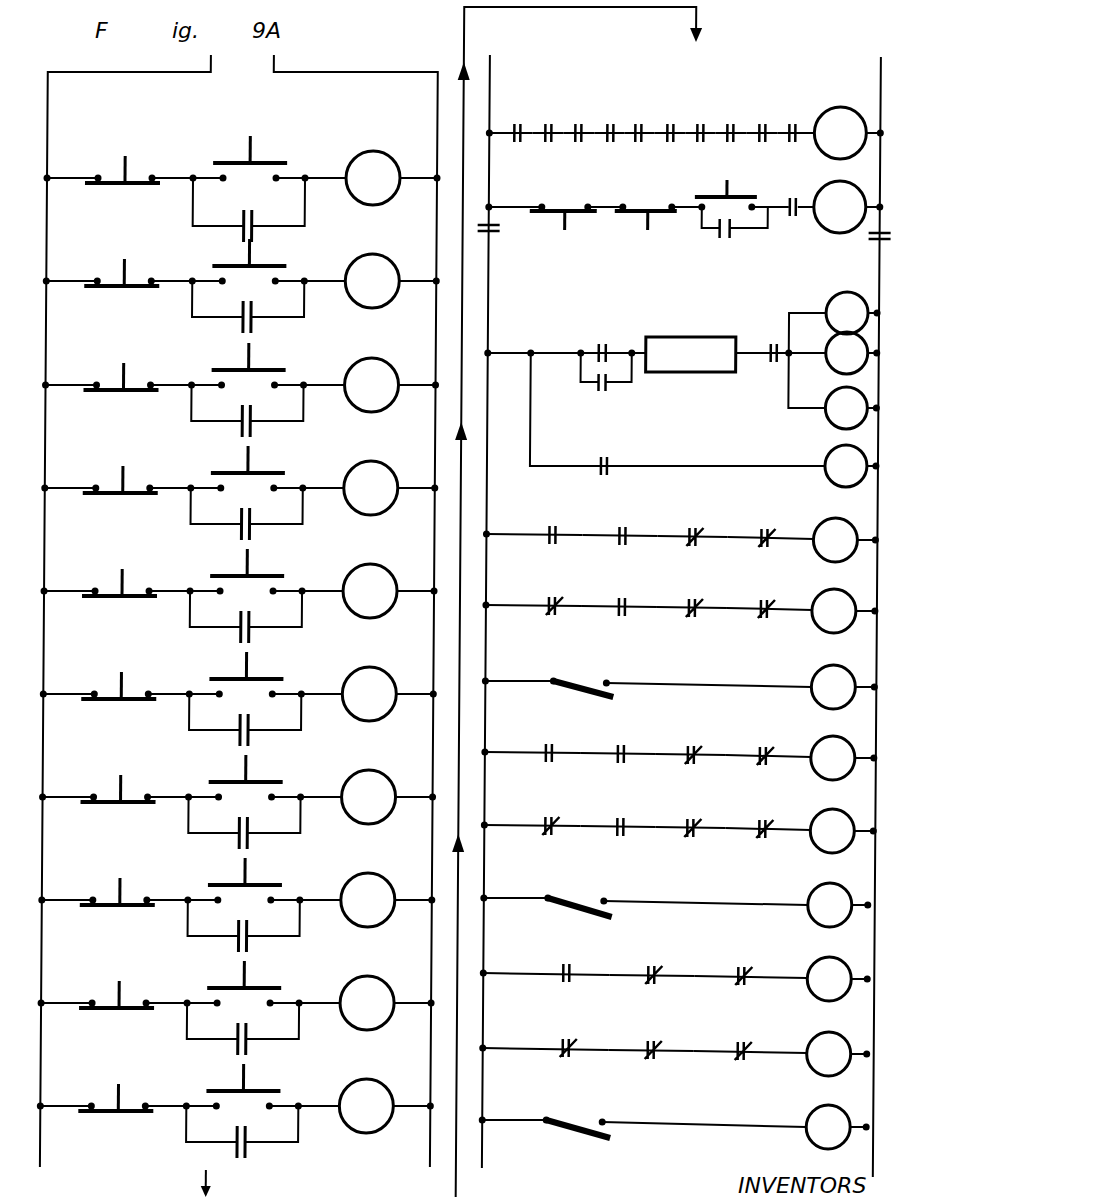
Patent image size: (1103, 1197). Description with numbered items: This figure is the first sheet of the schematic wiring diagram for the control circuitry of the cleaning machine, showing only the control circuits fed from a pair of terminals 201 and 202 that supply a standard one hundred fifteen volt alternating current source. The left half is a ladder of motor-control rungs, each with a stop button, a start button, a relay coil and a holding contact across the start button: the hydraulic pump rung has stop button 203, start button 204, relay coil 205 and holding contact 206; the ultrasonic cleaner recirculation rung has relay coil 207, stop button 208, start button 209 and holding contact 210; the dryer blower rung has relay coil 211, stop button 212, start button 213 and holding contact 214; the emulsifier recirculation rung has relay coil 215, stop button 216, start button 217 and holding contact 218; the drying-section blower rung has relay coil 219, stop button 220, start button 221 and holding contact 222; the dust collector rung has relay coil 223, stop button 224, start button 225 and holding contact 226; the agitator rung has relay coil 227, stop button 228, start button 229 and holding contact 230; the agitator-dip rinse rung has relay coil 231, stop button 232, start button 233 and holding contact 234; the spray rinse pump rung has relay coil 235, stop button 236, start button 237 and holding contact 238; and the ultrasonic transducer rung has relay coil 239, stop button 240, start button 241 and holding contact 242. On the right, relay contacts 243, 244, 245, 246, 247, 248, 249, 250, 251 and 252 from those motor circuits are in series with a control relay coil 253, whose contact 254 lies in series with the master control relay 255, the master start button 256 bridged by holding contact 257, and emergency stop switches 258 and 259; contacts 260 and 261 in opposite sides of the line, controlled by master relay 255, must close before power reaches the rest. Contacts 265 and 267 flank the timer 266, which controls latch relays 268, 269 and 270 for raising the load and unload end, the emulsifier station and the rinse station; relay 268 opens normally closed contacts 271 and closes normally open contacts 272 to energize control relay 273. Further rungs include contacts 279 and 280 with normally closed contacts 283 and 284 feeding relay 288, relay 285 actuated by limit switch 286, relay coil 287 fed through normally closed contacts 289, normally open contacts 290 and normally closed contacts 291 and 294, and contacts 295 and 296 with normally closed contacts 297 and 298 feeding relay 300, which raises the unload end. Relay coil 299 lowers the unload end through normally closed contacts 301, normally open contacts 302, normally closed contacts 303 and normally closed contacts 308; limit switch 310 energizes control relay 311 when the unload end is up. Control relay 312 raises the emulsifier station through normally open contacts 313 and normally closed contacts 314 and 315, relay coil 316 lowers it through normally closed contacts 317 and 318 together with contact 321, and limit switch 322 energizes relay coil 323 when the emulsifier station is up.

The terminal 201 is at (210, 63).
The terminal 202 is at (276, 70).
The stop button 203 is at (128, 165).
The start button 204 is at (256, 150).
The relay coil 205 is at (417, 145).
The holding contact 206 is at (253, 221).
The relay coil 207 is at (413, 251).
The stop button 208 is at (128, 268).
The start button 209 is at (253, 258).
The holding contact 210 is at (233, 305).
The relay coil 211 is at (413, 355).
The stop button 212 is at (128, 372).
The start button 213 is at (253, 362).
The holding contact 214 is at (233, 409).
The relay coil 215 is at (413, 458).
The stop button 216 is at (128, 475).
The start button 217 is at (253, 465).
The holding contact 218 is at (257, 538).
The relay coil 219 is at (413, 561).
The stop button 220 is at (122, 577).
The start button 221 is at (250, 561).
The holding contact 222 is at (240, 635).
The relay coil 223 is at (413, 664).
The stop button 224 is at (122, 680).
The start button 225 is at (254, 670).
The holding contact 226 is at (240, 738).
The relay coil 227 is at (413, 767).
The stop button 228 is at (122, 783).
The start button 229 is at (254, 773).
The holding contact 230 is at (240, 841).
The relay coil 231 is at (413, 870).
The stop button 232 is at (122, 886).
The start button 233 is at (254, 876).
The holding contact 234 is at (240, 944).
The relay coil 235 is at (413, 973).
The stop button 236 is at (122, 989).
The start button 237 is at (254, 979).
The holding contact 238 is at (240, 1047).
The relay coil 239 is at (413, 1076).
The stop button 240 is at (122, 1092).
The start button 241 is at (254, 1082).
The holding contact 242 is at (240, 1150).
The relay contact 243 is at (515, 122).
The relay contact 244 is at (546, 122).
The relay contact 245 is at (577, 122).
The relay contact 246 is at (609, 122).
The relay contact 247 is at (637, 122).
The relay contact 248 is at (669, 122).
The relay contact 249 is at (699, 122).
The relay contact 250 is at (729, 122).
The relay contact 251 is at (761, 122).
The relay contact 252 is at (791, 122).
The control relay coil 253 is at (870, 90).
The contact 254 is at (790, 202).
The master control relay 255 is at (870, 182).
The master start button 256 is at (715, 190).
The holding contact 257 is at (718, 233).
The emergency stop switch 258 is at (567, 185).
The emergency stop switch 259 is at (640, 200).
The contact 260 is at (492, 240).
The contact 261 is at (880, 240).
The contacts 265 is at (598, 384).
The timer 266 is at (695, 373).
The contacts 267 is at (772, 349).
The latch relay 268 is at (846, 292).
The latch relay 269 is at (828, 354).
The latch relay 270 is at (836, 418).
The normally closed contacts 271 is at (603, 344).
The normally open contacts 272 is at (608, 458).
The control relay 273 is at (830, 460).
The contacts 279 is at (564, 503).
The contacts 280 is at (625, 527).
The normally closed contacts 283 is at (695, 527).
The normally closed contacts 284 is at (767, 528).
The relay 285 is at (830, 672).
The limit switch 286 is at (595, 680).
The relay coil 287 is at (848, 582).
The relay 288 is at (860, 504).
The normally closed contacts 289 is at (555, 598).
The normally open contacts 290 is at (625, 600).
The normally closed contact 291 is at (715, 580).
The normally closed contact 294 is at (767, 602).
The normally open contacts 295 is at (553, 749).
The normally open contacts 296 is at (625, 750).
The normally closed contacts 297 is at (695, 751).
The normally closed contacts 298 is at (767, 752).
The relay coil 299 is at (848, 805).
The relay 300 is at (857, 730).
The normally closed contacts 301 is at (553, 826).
The normally open contacts 302 is at (625, 824).
The normally closed contacts 303 is at (710, 805).
The normally closed contacts 308 is at (767, 822).
The limit switch 310 is at (615, 877).
The control relay 311 is at (828, 884).
The control relay 312 is at (855, 953).
The normally open contacts 313 is at (615, 953).
The normally closed contacts 314 is at (690, 948).
The normally closed contacts 315 is at (770, 952).
The relay coil 316 is at (855, 1028).
The normally closed contacts 317 is at (600, 1028).
The normally closed contacts 318 is at (685, 1028).
The normally closed relay contact 321 is at (768, 1028).
The limit switch 322 is at (605, 1103).
The relay coil 323 is at (830, 1108).